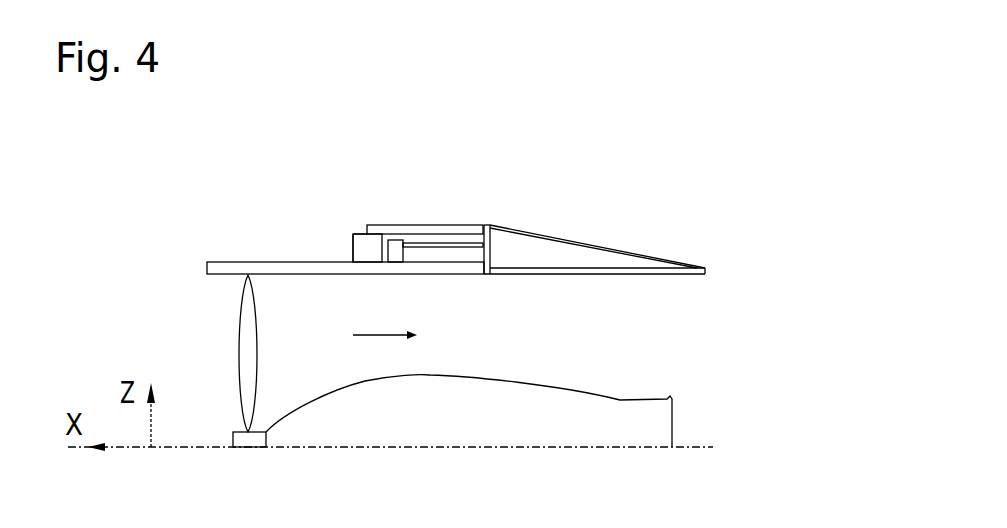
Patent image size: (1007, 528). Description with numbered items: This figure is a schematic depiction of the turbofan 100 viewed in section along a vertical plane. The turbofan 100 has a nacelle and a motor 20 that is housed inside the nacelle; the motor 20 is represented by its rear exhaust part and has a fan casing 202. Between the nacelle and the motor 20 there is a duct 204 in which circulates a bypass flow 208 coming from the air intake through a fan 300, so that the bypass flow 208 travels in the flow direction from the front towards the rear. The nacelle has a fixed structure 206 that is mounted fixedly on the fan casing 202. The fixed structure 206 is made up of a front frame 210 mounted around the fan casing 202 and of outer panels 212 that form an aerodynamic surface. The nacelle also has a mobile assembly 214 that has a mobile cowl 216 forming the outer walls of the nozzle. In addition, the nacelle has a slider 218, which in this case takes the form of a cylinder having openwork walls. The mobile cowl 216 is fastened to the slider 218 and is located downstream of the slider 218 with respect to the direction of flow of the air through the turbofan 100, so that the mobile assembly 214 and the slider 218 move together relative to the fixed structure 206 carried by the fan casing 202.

The turbofan 100 is at (128, 242).
The fan casing 202 is at (220, 262).
The duct 204 is at (322, 318).
The fixed structure 206 is at (335, 247).
The bypass flow 208 is at (419, 339).
The front frame 210 is at (365, 243).
The outer panels 212 is at (422, 233).
The mobile assembly 214 is at (695, 229).
The mobile cowl 216 is at (600, 260).
The slider 218 is at (390, 247).
The fan 300 is at (242, 350).
The motor 20 is at (667, 405).